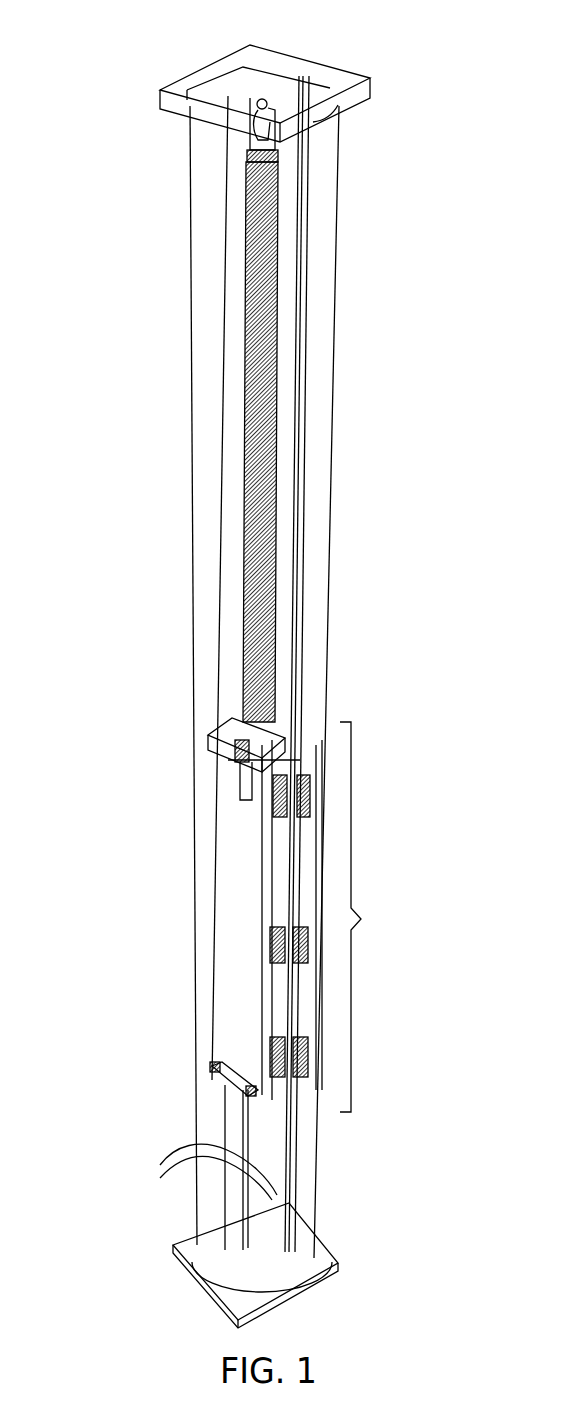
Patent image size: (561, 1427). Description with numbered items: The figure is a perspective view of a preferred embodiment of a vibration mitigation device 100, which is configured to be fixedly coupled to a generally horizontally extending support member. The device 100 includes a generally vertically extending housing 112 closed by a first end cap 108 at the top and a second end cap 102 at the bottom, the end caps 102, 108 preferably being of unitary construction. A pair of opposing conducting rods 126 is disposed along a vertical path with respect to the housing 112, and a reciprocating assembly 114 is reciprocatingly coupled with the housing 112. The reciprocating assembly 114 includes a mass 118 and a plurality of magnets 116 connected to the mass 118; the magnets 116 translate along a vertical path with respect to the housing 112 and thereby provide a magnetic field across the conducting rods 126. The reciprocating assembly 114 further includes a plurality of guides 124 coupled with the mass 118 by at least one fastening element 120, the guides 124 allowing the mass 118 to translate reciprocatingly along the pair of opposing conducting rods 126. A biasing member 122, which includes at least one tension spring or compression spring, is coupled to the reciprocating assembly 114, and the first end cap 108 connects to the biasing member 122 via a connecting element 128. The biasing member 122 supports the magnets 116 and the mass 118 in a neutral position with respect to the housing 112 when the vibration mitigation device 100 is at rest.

The vibration mitigation device 100 is at (153, 331).
The second end cap 102 is at (330, 1256).
The first end cap 108 is at (365, 72).
The generally vertically extending housing 112 is at (322, 585).
The reciprocating assembly 114 is at (373, 917).
The magnets 116 is at (273, 800).
The mass 118 is at (318, 730).
The fastening element 120 is at (242, 734).
The biasing member 122 is at (277, 387).
The guides 124 is at (268, 766).
The conducting rods 126 is at (262, 1182).
The connecting element 128 is at (252, 128).